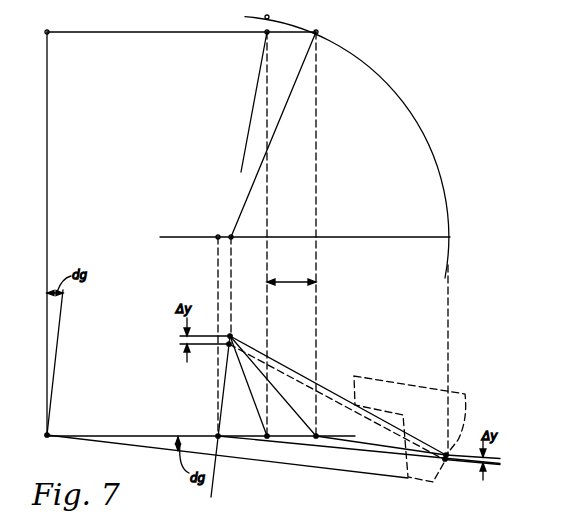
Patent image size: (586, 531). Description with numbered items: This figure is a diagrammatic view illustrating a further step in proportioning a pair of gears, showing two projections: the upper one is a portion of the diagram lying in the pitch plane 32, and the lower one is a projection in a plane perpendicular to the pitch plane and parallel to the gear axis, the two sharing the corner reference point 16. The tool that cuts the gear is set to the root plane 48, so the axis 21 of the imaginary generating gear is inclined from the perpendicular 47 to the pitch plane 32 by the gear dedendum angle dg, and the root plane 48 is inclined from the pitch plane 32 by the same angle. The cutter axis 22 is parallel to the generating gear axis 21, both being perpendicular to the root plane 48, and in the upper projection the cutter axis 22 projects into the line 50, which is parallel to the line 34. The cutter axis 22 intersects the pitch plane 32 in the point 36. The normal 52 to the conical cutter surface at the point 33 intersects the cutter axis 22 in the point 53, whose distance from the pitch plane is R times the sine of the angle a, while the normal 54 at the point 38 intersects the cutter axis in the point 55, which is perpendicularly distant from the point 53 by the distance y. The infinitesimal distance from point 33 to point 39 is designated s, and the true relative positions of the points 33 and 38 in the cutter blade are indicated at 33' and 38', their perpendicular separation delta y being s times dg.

The reference point 16 is at (48, 32).
The generating gear axis 21 is at (60, 350).
The cutter axis 22 is at (222, 406).
The pitch plane 32 is at (163, 435).
The point on conical cutter surface 33 is at (332, 238).
The true relative position of point 33 33' is at (353, 396).
The line 34 is at (163, 32).
The intersection point 36 is at (218, 237).
The point on conical cutter surface 38 is at (278, 233).
The true relative position of point 38 38' is at (359, 420).
The point 39 is at (268, 33).
The perpendicular to the pitch plane 47 is at (46, 361).
The root plane 48 is at (372, 477).
The projected cutter axis line 50 is at (357, 237).
The normal to the conical cutter surface at point 33 52 is at (270, 146).
The intersection point 53 is at (232, 239).
The normal to the conical cutter surface at point 38 54 is at (253, 106).
The intersection point 55 is at (229, 346).